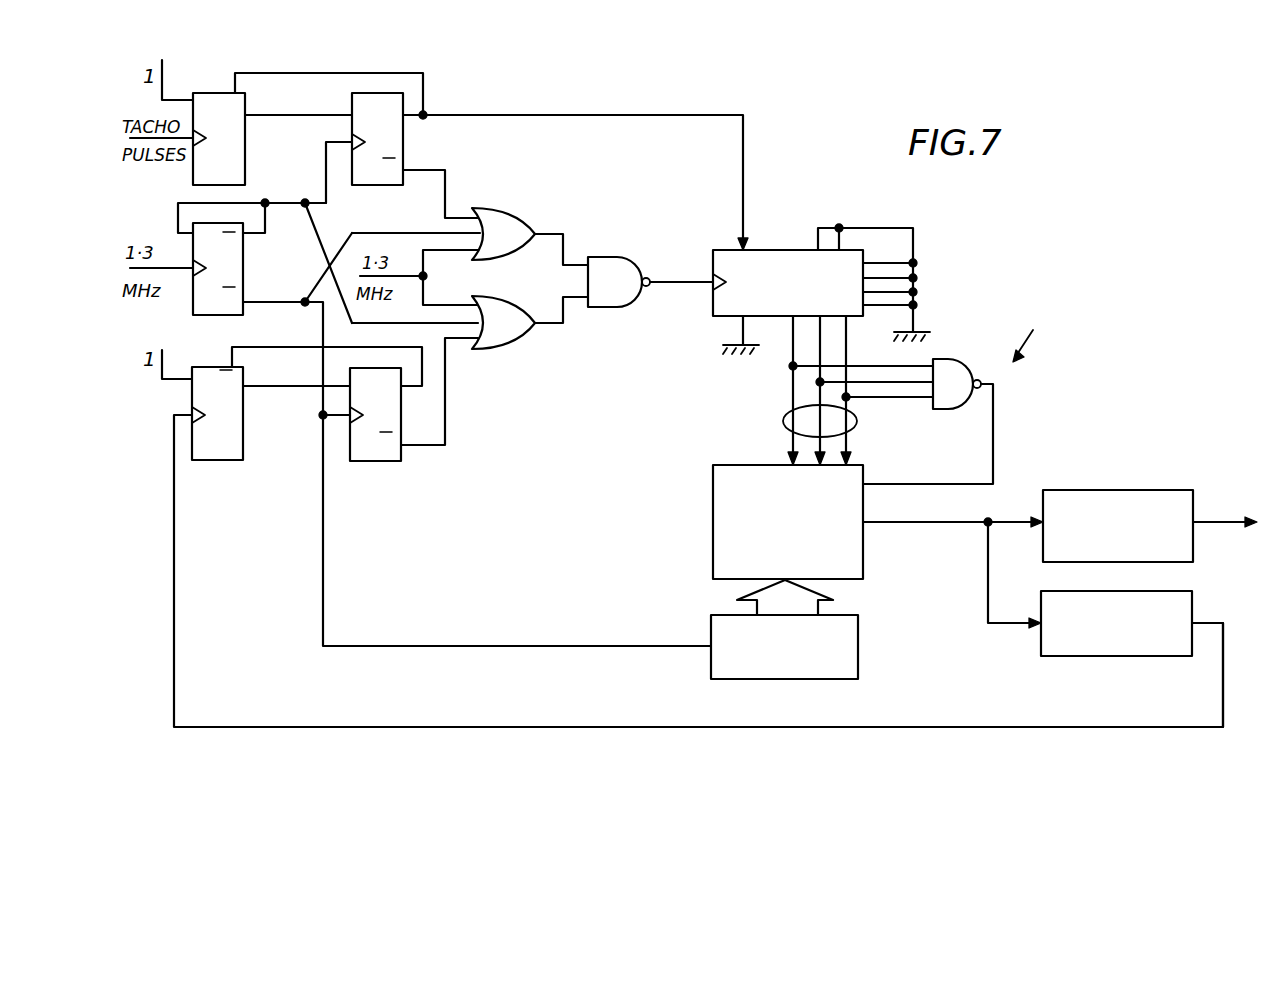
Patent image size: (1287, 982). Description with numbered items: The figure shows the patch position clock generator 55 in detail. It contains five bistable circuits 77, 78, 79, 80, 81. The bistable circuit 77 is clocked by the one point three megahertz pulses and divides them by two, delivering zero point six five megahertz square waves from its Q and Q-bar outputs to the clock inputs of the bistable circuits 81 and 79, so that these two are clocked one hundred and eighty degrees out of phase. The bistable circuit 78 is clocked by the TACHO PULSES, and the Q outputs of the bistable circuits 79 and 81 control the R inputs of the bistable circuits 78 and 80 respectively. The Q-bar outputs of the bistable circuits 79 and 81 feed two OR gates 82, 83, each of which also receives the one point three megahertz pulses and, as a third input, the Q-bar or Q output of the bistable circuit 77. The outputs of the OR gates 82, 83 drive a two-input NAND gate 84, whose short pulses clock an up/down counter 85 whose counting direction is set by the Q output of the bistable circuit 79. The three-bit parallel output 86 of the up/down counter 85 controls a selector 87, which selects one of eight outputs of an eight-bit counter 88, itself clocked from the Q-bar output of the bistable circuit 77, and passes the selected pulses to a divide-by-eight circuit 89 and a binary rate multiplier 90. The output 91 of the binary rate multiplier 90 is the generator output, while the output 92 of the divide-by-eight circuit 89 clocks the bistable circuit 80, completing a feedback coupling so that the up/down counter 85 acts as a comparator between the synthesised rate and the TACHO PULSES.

The patch position clock generator 55 is at (1042, 327).
The bistable circuit 77 is at (243, 262).
The bistable circuit 78 is at (207, 93).
The bistable circuit 79 is at (403, 140).
The bistable circuit 80 is at (243, 460).
The bistable circuit 81 is at (401, 461).
The OR gate 82 is at (518, 218).
The OR gate 83 is at (510, 343).
The NAND gate 84 is at (633, 262).
The up/down counter 85 is at (778, 250).
The 3-bit parallel output 86 is at (857, 424).
The selector 87 is at (756, 463).
The 8-bit counter 88 is at (858, 630).
The divide by 8 circuit 89 is at (1192, 606).
The binary rate multiplier 90 is at (1118, 490).
The output 91 is at (1219, 520).
The output 92 is at (1223, 628).